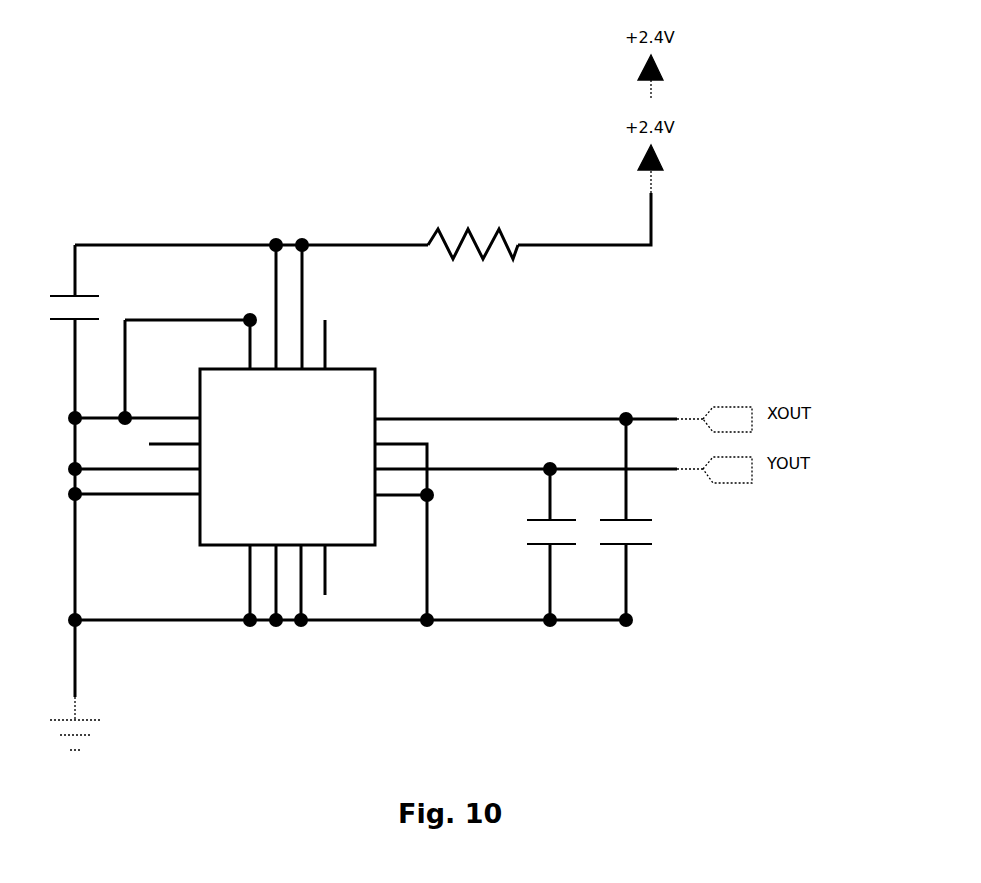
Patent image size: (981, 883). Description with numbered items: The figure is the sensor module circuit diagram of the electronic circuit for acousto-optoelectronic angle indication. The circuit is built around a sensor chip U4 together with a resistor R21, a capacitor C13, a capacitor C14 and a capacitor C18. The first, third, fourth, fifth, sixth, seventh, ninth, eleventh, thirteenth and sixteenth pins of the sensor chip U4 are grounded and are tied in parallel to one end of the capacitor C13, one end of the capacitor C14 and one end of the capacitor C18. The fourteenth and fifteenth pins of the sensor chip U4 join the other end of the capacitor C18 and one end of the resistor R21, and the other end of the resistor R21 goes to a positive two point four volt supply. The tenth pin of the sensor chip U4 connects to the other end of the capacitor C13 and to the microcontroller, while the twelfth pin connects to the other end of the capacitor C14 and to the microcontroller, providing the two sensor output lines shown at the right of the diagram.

The sensor chip U4 is at (288, 438).
The capacitor C18 is at (65, 339).
The resistor R21 is at (473, 226).
The capacitor C13 is at (527, 528).
The capacitor C14 is at (648, 528).